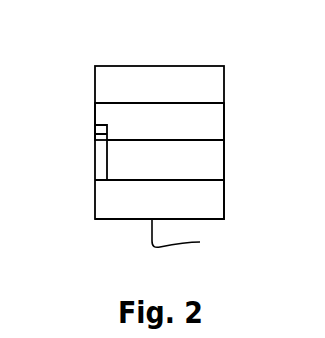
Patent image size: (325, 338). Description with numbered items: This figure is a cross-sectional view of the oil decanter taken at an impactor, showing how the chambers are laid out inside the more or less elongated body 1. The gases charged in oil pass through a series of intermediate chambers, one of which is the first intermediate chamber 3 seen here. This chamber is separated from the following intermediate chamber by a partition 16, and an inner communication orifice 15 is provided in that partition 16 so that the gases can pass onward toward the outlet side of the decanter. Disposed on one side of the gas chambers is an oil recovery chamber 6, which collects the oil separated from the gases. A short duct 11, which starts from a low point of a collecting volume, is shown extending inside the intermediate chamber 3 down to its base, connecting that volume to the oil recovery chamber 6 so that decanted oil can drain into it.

The first intermediate chamber 3 is at (138, 82).
The inner communication orifice 15 is at (211, 123).
The partition 16 is at (211, 168).
The oil recovery chamber 6 is at (208, 204).
The short duct 11 is at (98, 158).
The body 1 is at (182, 234).